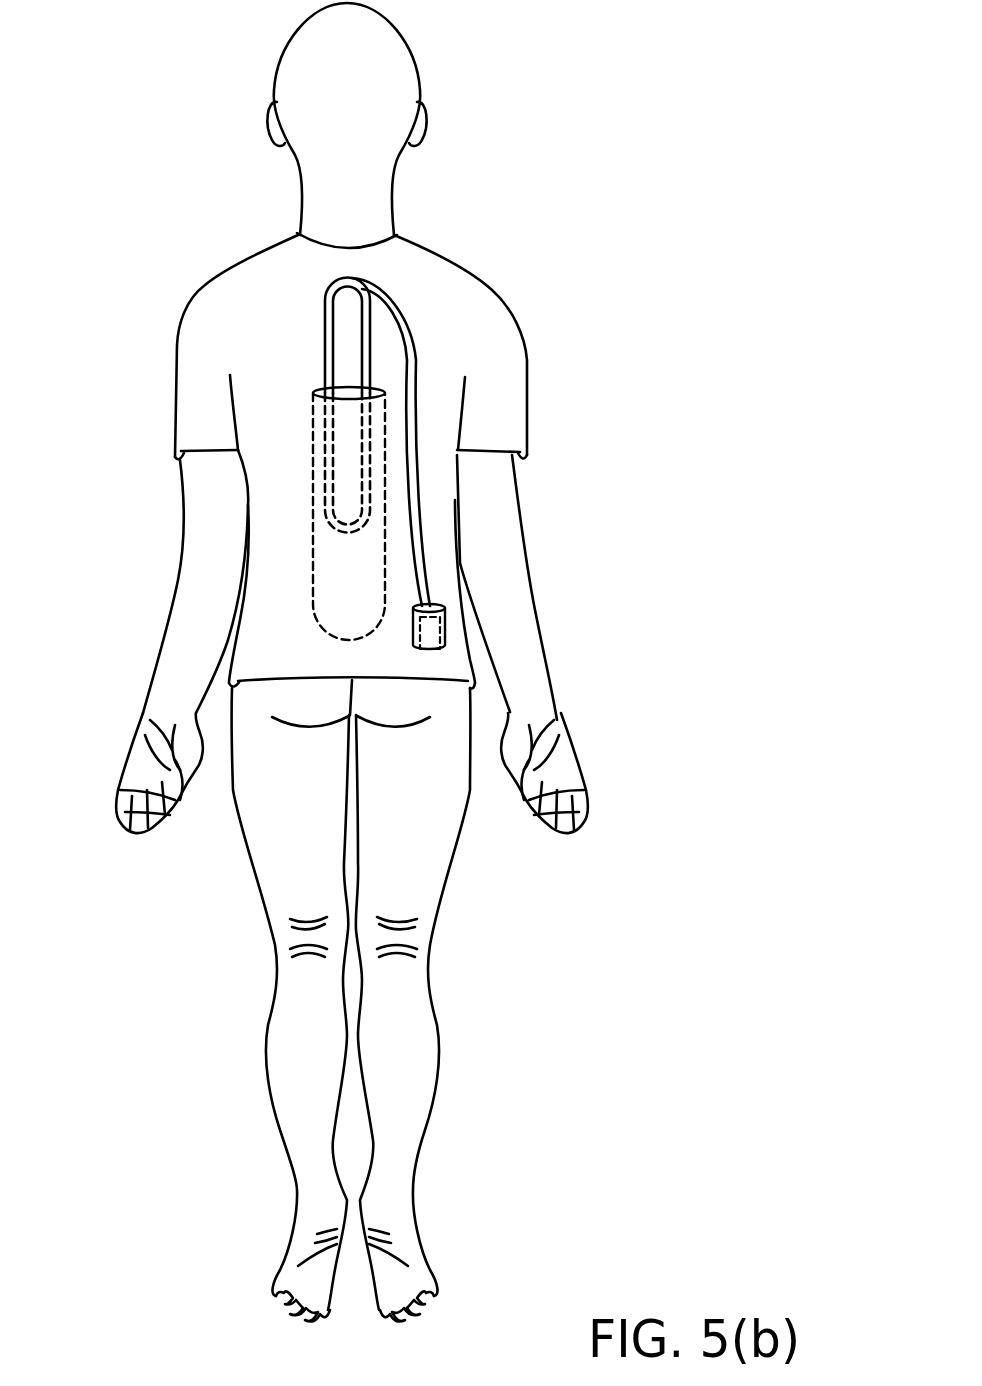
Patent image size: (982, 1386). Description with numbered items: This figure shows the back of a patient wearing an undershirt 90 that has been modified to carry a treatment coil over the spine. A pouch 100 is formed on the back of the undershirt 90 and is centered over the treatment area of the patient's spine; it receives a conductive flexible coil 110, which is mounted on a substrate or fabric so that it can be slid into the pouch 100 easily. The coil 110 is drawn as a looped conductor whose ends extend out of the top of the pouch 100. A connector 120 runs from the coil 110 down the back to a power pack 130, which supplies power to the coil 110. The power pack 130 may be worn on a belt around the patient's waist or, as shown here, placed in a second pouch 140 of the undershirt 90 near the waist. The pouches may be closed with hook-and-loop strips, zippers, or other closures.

The undershirt 90 is at (432, 253).
The pouch 100 is at (317, 556).
The conductive flexible coil 110 is at (323, 360).
The connector 120 is at (427, 569).
The power pack 130 is at (427, 636).
The pouch 140 is at (430, 648).